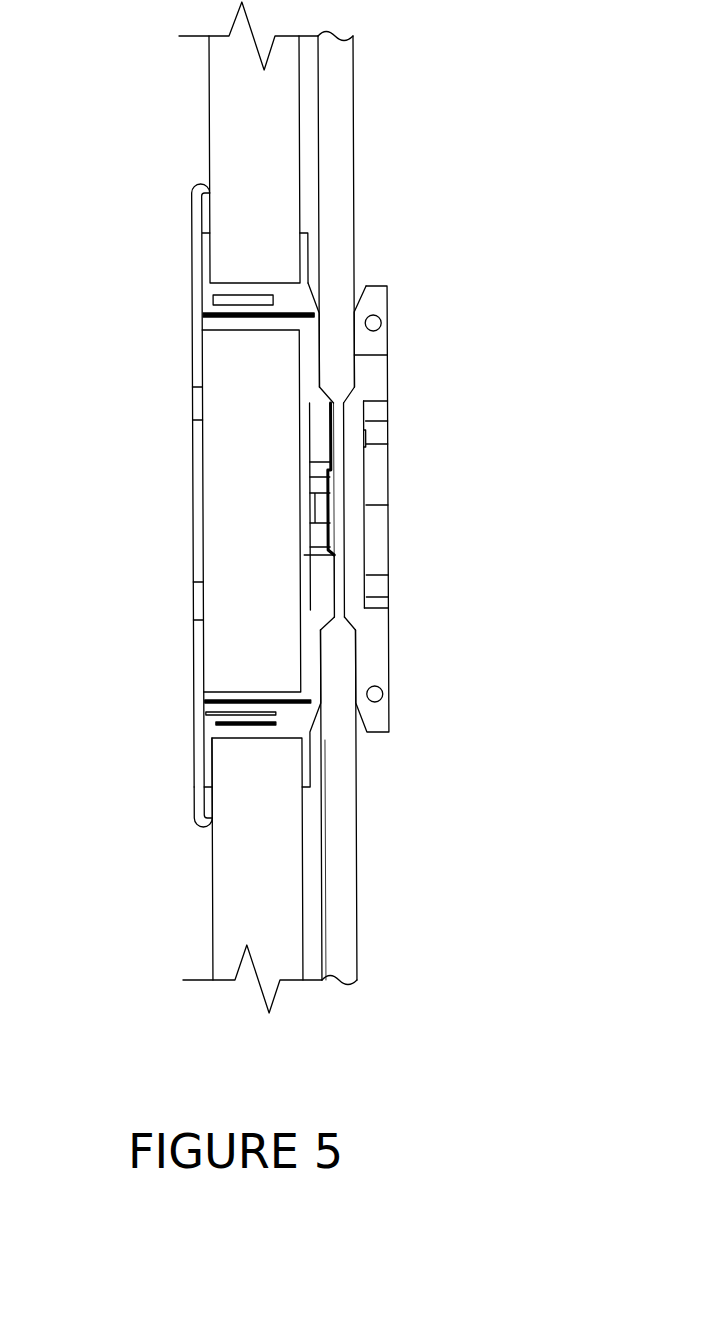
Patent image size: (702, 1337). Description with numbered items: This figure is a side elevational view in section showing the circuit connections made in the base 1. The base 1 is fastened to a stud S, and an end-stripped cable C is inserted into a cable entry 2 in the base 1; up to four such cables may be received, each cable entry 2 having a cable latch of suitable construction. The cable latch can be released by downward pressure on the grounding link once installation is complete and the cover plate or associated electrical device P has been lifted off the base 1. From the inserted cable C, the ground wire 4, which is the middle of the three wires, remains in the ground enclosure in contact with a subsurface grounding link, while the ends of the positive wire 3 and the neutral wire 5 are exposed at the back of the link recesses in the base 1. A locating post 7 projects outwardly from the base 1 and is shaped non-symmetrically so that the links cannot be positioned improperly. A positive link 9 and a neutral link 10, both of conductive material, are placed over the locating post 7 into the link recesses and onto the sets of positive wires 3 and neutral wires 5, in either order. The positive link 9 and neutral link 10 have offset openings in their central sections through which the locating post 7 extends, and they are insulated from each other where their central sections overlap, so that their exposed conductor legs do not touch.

The stud S is at (229, 77).
The associated electrical device P is at (196, 463).
The end-stripped cable C is at (333, 373).
The base 1 is at (372, 300).
The cable entry 2 is at (355, 355).
The positive wire 3 is at (337, 435).
The ground wire 4 is at (445, 455).
The neutral wire 5 is at (462, 533).
The locating post 7 is at (337, 512).
The positive link 9 is at (328, 483).
The neutral link 10 is at (450, 522).